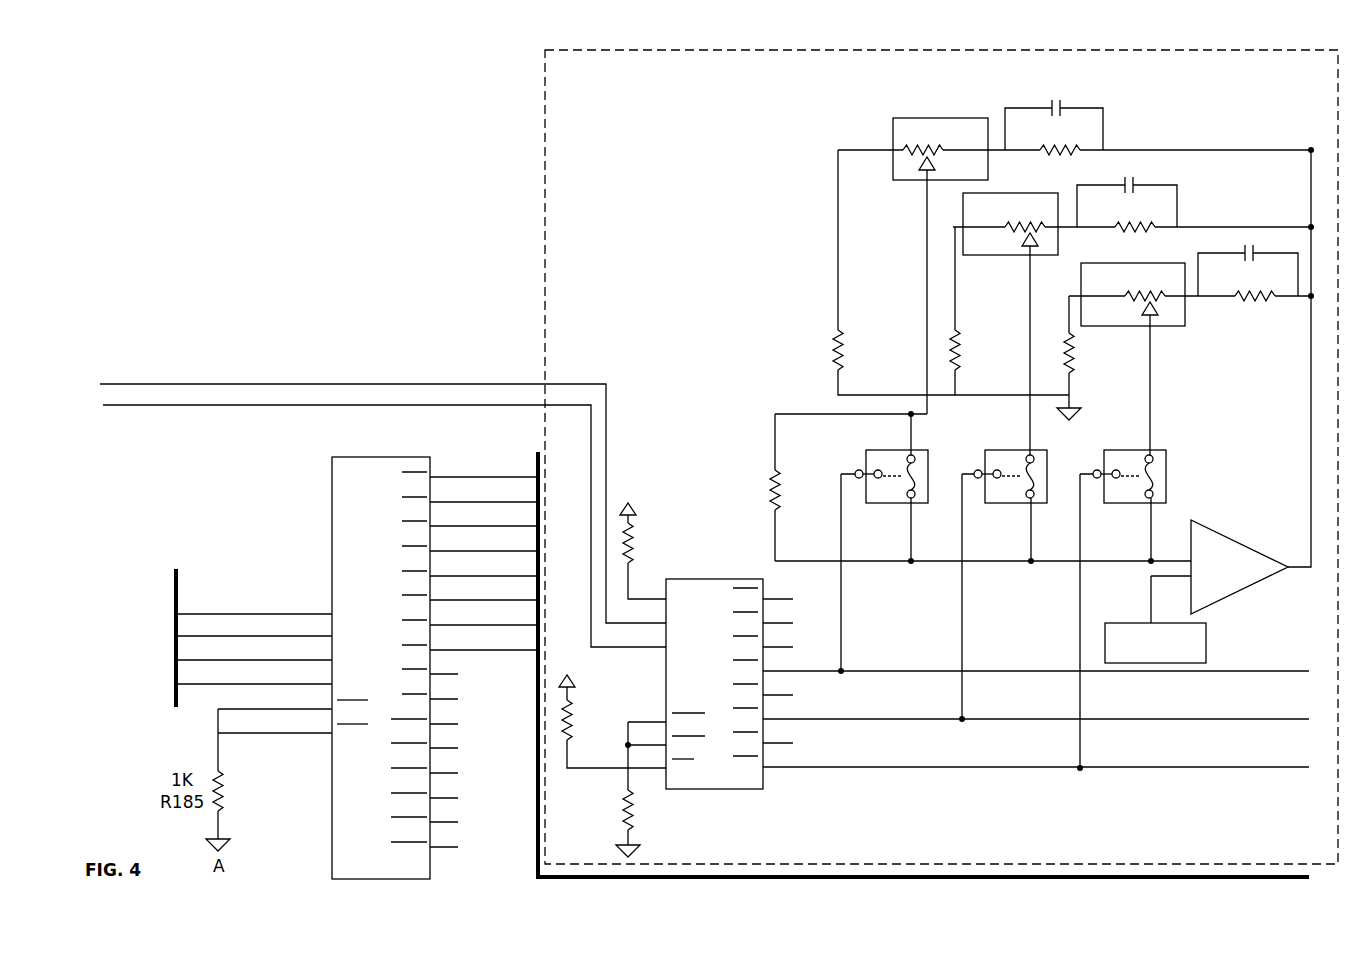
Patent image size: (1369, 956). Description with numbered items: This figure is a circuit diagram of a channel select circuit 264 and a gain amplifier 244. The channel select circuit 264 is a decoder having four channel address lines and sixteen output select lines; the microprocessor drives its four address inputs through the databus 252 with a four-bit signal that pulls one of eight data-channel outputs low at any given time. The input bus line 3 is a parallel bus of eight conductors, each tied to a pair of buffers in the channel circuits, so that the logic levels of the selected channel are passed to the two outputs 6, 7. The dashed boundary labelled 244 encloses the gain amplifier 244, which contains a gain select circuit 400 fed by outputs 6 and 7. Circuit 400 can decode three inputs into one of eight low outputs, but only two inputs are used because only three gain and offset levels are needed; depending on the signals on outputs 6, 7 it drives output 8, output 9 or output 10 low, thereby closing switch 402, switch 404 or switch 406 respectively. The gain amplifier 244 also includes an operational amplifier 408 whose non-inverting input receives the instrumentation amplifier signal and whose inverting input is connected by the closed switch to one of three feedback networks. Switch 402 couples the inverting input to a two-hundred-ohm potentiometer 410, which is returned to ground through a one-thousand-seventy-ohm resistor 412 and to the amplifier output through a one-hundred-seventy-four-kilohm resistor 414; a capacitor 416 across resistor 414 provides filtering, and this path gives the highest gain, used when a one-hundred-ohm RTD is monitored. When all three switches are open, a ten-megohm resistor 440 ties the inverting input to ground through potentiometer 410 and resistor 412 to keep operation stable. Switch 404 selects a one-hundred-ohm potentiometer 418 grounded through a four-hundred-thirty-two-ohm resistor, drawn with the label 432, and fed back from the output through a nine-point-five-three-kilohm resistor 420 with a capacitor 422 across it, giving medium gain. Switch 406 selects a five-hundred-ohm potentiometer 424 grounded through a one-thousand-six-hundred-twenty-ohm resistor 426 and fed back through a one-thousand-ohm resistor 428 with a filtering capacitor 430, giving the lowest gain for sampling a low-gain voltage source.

The input bus line 3 is at (1242, 875).
The output 6 is at (253, 384).
The output 7 is at (292, 405).
The output 8 is at (1244, 671).
The output 9 is at (1244, 719).
The output 10 is at (1244, 768).
The gain amplifier 244 is at (544, 305).
The databus 252 is at (178, 581).
The channel select circuit 264 is at (316, 808).
The gain select circuit 400 is at (725, 789).
The switch 402 is at (928, 450).
The switch 404 is at (1048, 450).
The switch 406 is at (1168, 450).
The operational amplifier 408 is at (1246, 541).
The potentiometer 410 is at (972, 118).
The resistor 412 is at (840, 335).
The resistor 414 is at (1083, 150).
The capacitor 416 is at (1105, 108).
The potentiometer 418 is at (1040, 193).
The resistor 420 is at (1155, 227).
The capacitor 422 is at (1177, 190).
The potentiometer 424 is at (1175, 327).
The resistor 426 is at (1063, 337).
The resistor 428 is at (1273, 298).
The capacitor 430 is at (1250, 250).
The resistor R244 432 is at (980, 311).
The resistor 440 is at (777, 478).